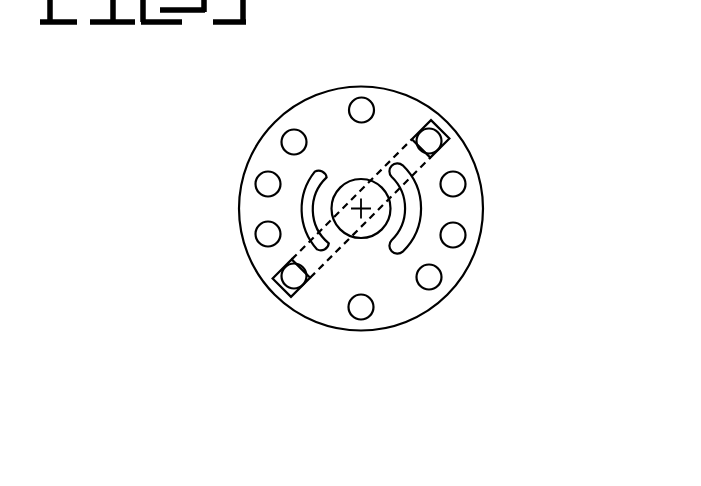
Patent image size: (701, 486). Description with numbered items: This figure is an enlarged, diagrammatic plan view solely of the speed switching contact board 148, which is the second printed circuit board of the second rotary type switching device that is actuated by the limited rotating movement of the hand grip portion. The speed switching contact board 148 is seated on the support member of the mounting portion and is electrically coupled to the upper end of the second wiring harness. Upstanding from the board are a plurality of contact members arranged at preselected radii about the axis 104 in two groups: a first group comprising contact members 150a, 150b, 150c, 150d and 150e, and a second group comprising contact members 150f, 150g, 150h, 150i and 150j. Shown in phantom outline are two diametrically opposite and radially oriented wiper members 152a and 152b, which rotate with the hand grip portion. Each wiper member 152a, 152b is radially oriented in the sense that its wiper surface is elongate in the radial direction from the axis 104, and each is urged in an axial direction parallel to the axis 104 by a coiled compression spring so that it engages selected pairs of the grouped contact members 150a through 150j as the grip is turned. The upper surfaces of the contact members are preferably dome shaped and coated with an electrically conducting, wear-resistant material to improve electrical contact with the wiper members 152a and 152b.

The speed switching contact board 148 is at (298, 111).
The axis 104 is at (361, 207).
The contact member 150a is at (292, 141).
The contact member 150b is at (270, 183).
The contact member 150c is at (270, 234).
The contact member 150d is at (292, 279).
The contact member 150e is at (303, 207).
The contact member 150f is at (438, 278).
The contact member 150g is at (454, 235).
The contact member 150h is at (454, 185).
The contact member 150i is at (438, 142).
The contact member 150j is at (421, 209).
The wiper member 152a is at (315, 274).
The wiper member 152b is at (413, 136).